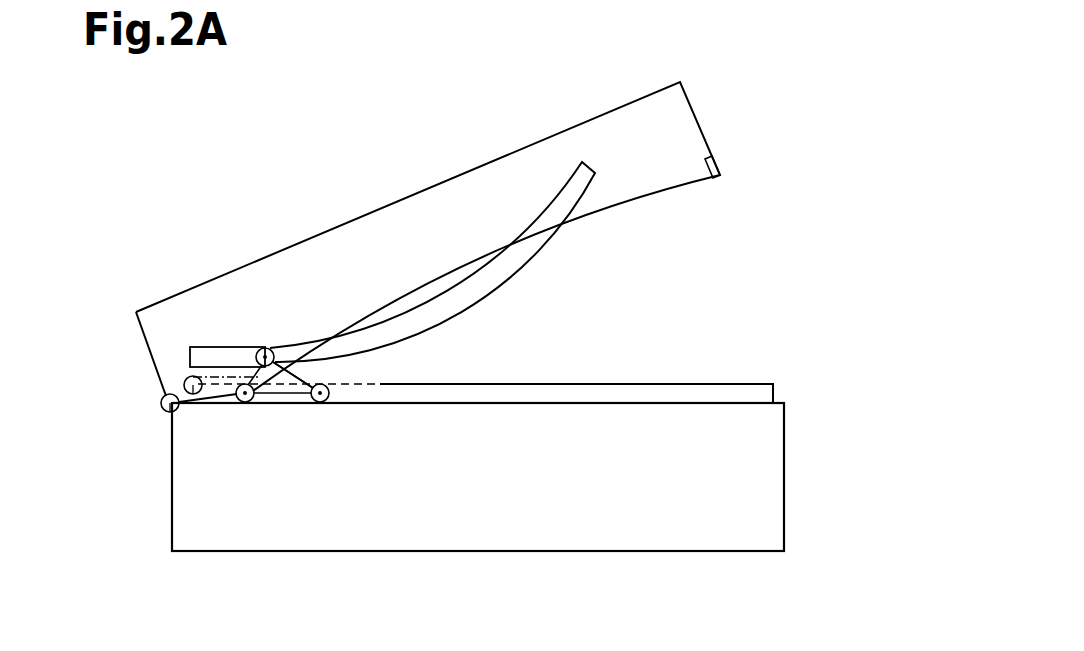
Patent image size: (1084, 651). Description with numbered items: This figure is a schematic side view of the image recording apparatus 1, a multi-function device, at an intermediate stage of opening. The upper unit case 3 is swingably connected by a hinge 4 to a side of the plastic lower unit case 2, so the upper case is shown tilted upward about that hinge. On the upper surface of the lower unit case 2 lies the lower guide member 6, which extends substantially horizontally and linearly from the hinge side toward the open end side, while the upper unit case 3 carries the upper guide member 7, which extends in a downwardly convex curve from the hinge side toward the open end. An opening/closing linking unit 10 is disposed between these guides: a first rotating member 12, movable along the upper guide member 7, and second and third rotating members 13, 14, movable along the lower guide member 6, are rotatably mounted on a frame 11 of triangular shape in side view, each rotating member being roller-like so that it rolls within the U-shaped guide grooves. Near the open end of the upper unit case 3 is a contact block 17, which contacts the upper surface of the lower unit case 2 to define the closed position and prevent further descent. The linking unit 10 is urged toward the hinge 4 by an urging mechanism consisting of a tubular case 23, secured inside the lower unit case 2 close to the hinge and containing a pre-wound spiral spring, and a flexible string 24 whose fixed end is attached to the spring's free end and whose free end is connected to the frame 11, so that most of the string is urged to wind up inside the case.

The image recording apparatus 1 is at (788, 266).
The lower unit case 2 is at (760, 485).
The upper unit case 3 is at (675, 132).
The hinge 4 is at (175, 410).
The lower guide member 6 is at (689, 395).
The upper guide member 7 is at (552, 188).
The opening/closing linking unit 10 is at (302, 363).
The frame 11 is at (293, 375).
The first rotating member 12 is at (265, 347).
The second rotating member 13 is at (247, 401).
The third rotating member 14 is at (320, 402).
The contact block 17 is at (715, 160).
The case 23 is at (193, 378).
The string 24 is at (227, 377).